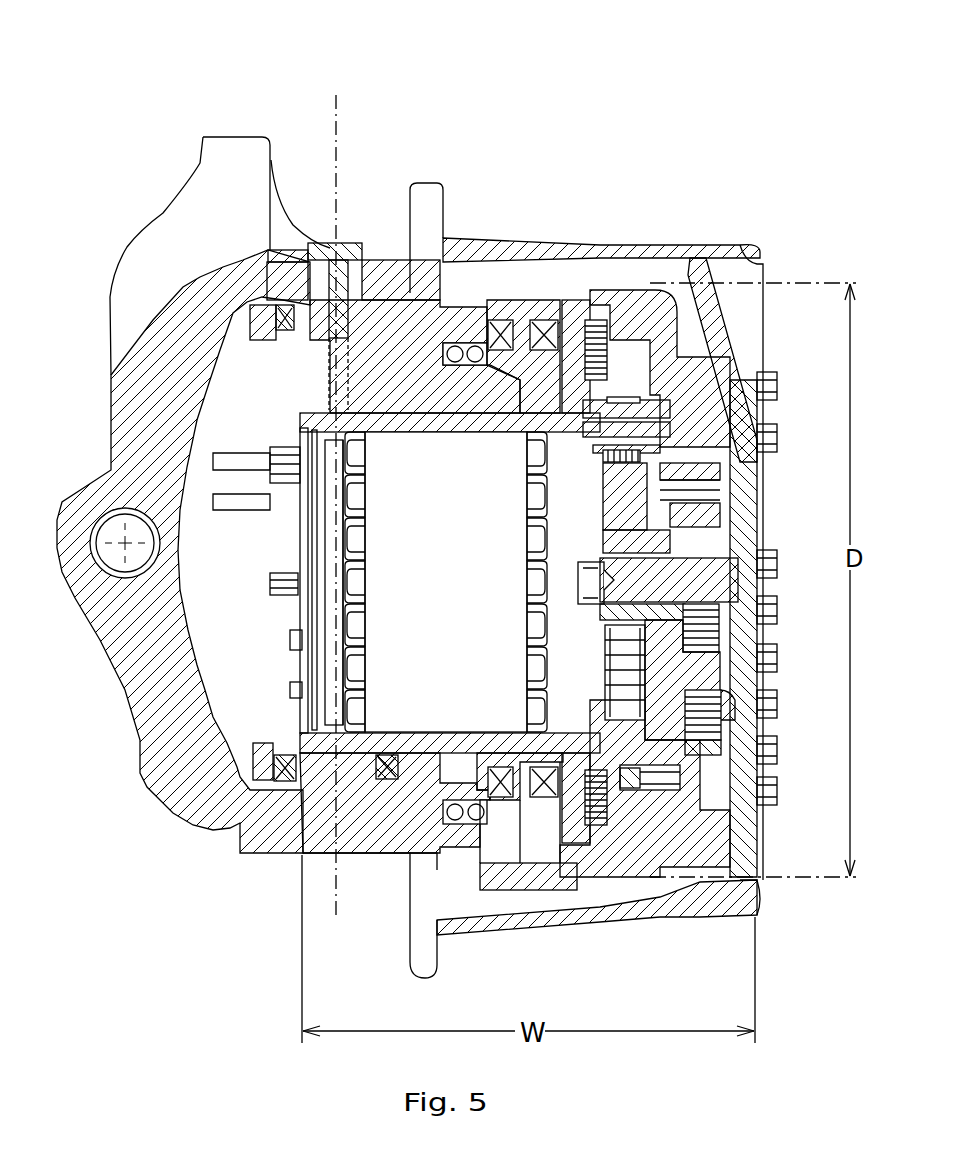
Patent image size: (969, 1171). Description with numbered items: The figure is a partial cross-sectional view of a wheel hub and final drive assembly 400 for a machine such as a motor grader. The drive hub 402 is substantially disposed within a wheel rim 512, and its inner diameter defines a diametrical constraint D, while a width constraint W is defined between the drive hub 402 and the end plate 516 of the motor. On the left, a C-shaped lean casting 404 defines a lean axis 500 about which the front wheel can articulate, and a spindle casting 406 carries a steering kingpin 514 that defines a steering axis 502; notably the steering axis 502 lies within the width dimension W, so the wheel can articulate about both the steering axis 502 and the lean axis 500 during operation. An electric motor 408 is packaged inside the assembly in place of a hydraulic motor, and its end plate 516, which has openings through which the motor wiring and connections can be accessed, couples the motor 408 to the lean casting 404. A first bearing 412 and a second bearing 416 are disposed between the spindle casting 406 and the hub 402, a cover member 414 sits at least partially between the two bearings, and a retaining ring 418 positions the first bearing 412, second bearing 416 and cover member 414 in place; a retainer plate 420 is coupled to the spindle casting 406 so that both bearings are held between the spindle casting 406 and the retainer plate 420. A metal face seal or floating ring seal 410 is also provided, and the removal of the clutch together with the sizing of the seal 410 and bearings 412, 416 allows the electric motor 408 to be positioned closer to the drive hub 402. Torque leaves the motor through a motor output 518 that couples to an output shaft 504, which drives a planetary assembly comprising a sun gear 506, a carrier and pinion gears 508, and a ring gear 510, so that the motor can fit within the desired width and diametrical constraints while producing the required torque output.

The final drive assembly 400 is at (155, 123).
The drive hub 402 is at (637, 280).
The lean casting 404 is at (112, 640).
The spindle casting 406 is at (286, 335).
The electric motor 408 is at (470, 560).
The floating ring seal 410 is at (450, 340).
The first bearing 412 is at (448, 440).
The cover member 414 is at (490, 300).
The second bearing 416 is at (508, 433).
The retaining ring 418 is at (547, 300).
The retainer plate 420 is at (585, 300).
The lean axis 500 is at (150, 557).
The steering axis 502 is at (347, 115).
The output shaft 504 is at (722, 575).
The sun gear 506 is at (730, 625).
The carrier and pinion gears 508 is at (712, 662).
The ring gear 510 is at (715, 708).
The wheel rim 512 is at (708, 245).
The steering kingpin 514 is at (350, 245).
The end plate 516 is at (300, 611).
The motor output 518 is at (593, 584).